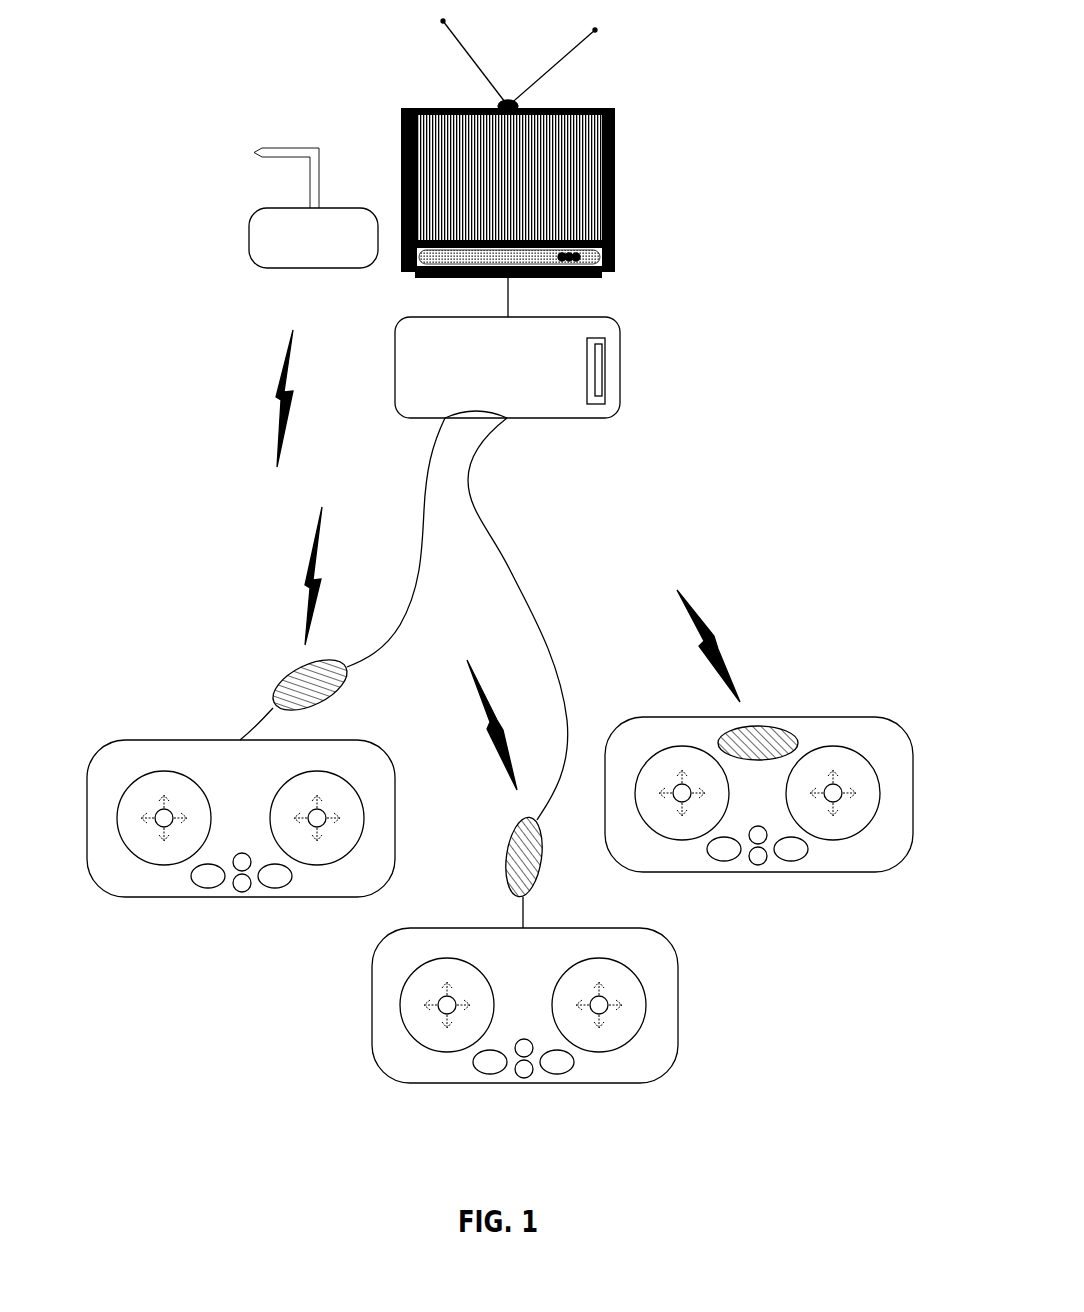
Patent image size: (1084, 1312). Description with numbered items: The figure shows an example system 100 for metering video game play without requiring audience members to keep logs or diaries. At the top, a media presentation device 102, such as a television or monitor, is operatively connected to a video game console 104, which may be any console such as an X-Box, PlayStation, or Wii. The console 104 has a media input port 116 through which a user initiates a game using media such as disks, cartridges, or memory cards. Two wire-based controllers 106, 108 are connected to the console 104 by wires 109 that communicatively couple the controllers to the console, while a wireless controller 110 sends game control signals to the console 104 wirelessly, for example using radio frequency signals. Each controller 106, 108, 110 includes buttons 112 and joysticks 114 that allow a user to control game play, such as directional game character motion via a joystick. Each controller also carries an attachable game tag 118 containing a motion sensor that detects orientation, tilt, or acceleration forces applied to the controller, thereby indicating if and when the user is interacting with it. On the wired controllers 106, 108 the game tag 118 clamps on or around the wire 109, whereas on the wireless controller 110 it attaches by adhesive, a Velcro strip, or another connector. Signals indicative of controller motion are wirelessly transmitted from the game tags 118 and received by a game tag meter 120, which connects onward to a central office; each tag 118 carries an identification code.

The system 100 is at (783, 85).
The media presentation device 102 is at (628, 118).
The video game console 104 is at (607, 315).
The wire-based controller 106 is at (198, 740).
The wire-based controller 108 is at (370, 1007).
The wires 109 is at (423, 503).
The wireless controller 110 is at (700, 717).
The buttons 112 is at (190, 902).
The joysticks 114 is at (165, 865).
The media input port 116 is at (605, 370).
The game tag 118 is at (300, 672).
The game tag meter 120 is at (250, 238).